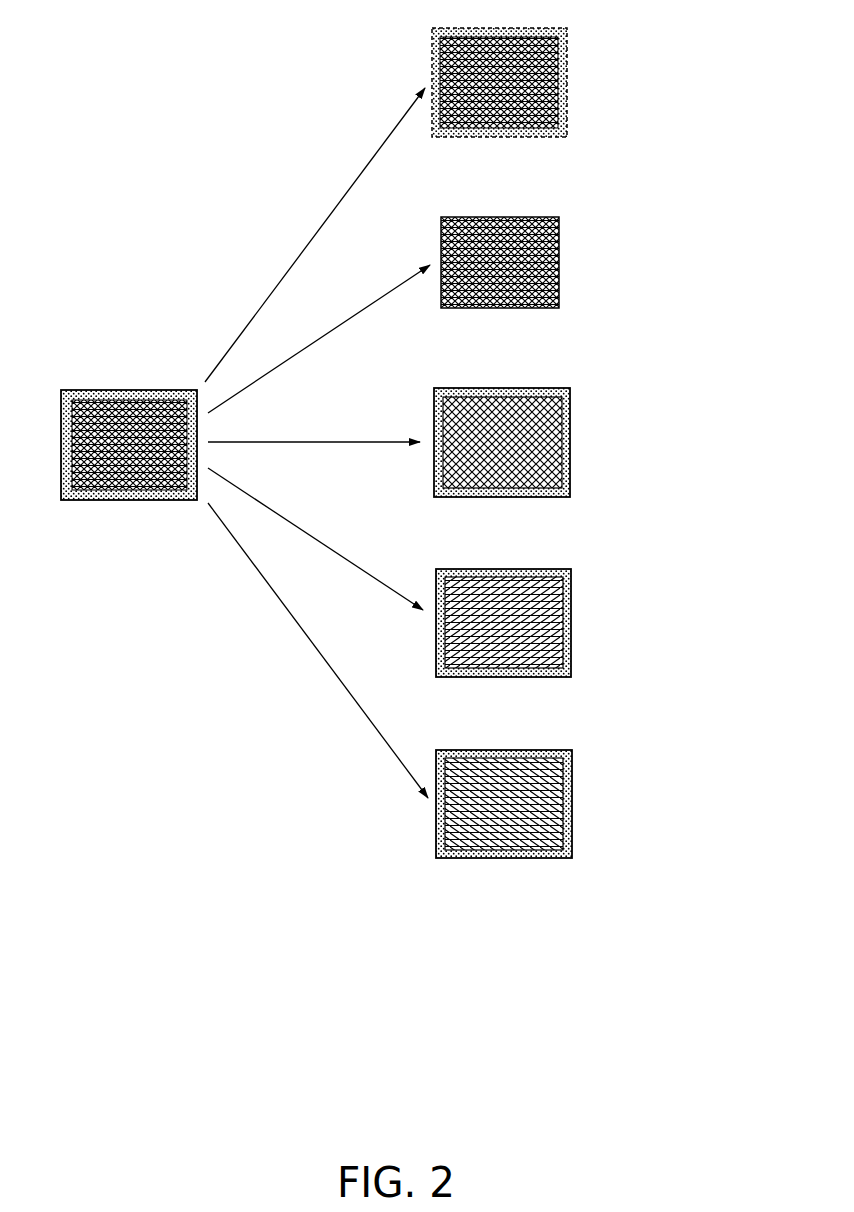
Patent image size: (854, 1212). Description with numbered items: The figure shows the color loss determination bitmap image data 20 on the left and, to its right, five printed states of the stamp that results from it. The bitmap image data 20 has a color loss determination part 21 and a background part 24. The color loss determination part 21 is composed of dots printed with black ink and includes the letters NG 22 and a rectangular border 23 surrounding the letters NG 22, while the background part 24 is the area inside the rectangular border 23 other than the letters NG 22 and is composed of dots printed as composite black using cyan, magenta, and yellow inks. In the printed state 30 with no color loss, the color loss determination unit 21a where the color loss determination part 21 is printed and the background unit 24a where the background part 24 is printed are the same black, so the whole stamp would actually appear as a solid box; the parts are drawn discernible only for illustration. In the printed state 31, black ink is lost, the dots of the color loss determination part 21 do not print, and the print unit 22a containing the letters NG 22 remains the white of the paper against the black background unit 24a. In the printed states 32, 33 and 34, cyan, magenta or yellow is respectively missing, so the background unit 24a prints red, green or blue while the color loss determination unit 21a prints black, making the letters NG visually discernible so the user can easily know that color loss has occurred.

The color loss determination bitmap image data 20 is at (101, 451).
The color loss determination part 21 is at (105, 574).
The letters NG 22 is at (58, 462).
The rectangular border 23 is at (110, 493).
The background part 24 is at (133, 493).
The printed state with no color loss 30 is at (574, 21).
The printed state when black ink is lost 31 is at (575, 202).
The printed state when cyan is lost 32 is at (576, 382).
The printed state when magenta is lost 33 is at (579, 563).
The printed state when yellow is lost 34 is at (580, 743).
The color loss determination unit 21a is at (556, 55).
The print unit containing the letters NG 22a is at (559, 232).
The background unit 24a is at (563, 120).